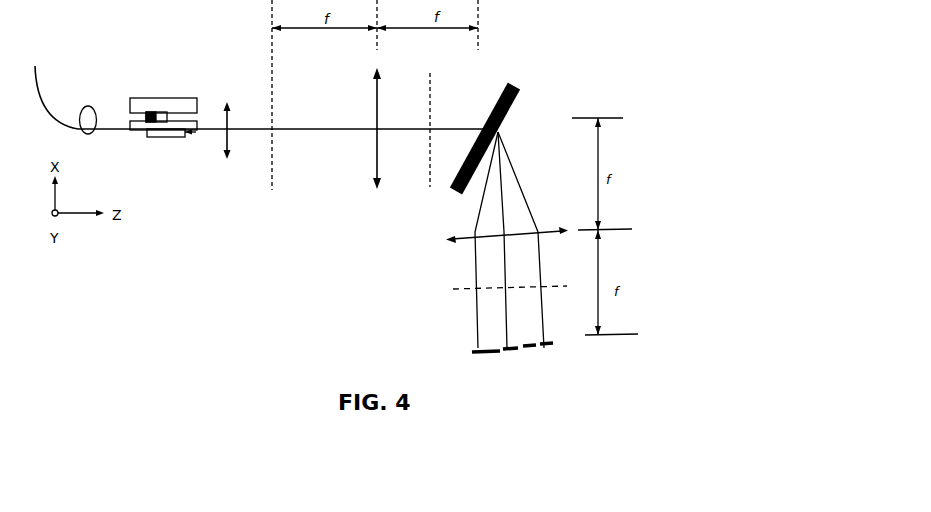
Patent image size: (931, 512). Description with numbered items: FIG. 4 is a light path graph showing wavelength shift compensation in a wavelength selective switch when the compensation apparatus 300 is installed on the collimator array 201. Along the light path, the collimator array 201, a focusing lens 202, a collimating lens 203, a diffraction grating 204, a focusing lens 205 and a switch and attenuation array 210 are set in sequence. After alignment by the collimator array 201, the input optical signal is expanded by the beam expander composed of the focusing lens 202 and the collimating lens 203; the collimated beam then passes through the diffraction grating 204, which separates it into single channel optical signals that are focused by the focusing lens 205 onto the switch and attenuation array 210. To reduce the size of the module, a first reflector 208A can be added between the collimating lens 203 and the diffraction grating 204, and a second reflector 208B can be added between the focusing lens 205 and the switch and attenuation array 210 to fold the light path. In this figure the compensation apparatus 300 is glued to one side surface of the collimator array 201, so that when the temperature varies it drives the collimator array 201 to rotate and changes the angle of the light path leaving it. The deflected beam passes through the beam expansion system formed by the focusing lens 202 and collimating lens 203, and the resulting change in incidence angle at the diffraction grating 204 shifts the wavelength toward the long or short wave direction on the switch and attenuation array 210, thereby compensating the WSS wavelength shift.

The compensation apparatus 300 is at (163, 102).
The collimator array 201 is at (171, 144).
The focusing lens 202 is at (231, 144).
The collimating lens 203 is at (364, 137).
The diffraction grating 204 is at (498, 127).
The focusing lens 205 is at (494, 240).
The first reflector 208A is at (428, 143).
The second reflector 208B is at (487, 290).
The switch and attenuation array 210 is at (495, 348).